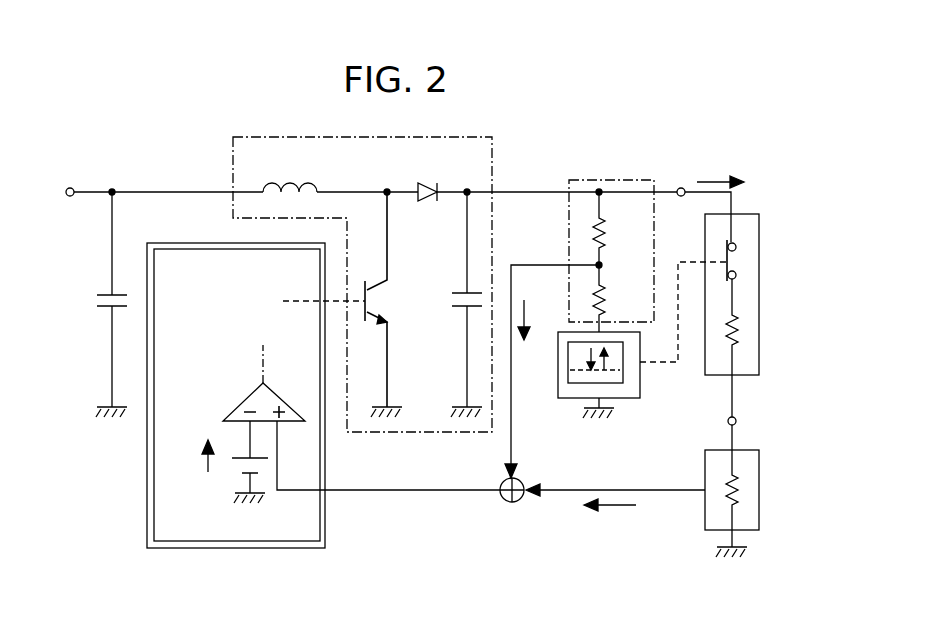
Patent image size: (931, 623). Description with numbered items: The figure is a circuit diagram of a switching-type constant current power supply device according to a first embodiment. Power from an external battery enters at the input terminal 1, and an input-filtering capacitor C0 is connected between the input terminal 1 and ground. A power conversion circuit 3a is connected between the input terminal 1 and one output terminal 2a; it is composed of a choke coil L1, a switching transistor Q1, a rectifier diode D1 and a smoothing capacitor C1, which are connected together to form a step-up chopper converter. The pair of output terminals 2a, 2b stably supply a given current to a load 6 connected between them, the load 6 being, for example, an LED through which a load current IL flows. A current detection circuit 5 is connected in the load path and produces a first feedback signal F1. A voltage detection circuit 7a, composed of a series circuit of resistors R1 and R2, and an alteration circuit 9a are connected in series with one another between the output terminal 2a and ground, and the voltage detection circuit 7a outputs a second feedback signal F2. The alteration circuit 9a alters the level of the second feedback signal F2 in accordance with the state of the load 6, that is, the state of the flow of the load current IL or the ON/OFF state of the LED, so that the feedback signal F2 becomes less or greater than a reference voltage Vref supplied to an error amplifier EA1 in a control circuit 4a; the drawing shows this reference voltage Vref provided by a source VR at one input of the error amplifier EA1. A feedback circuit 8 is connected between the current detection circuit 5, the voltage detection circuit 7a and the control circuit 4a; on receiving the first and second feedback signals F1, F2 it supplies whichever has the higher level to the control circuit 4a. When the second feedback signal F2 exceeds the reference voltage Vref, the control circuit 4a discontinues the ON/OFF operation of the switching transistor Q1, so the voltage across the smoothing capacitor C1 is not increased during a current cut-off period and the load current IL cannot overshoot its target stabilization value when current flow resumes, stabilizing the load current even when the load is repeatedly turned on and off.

The input terminal 1 is at (70, 187).
The output terminal 2a is at (681, 188).
The output terminal 2b is at (736, 421).
The power conversion circuit 3a is at (226, 170).
The control circuit 4a is at (325, 528).
The current detection circuit 5 is at (759, 490).
The load 6 is at (760, 240).
The voltage detection circuit 7a is at (602, 176).
The feedback circuit 8 is at (507, 504).
The alteration circuit 9a is at (622, 400).
The capacitor C0 is at (96, 302).
The smoothing capacitor C1 is at (447, 322).
The choke coil L1 is at (291, 182).
The rectifier diode D1 is at (427, 184).
The switching transistor Q1 is at (379, 300).
The resistor R1 is at (605, 236).
The resistor R2 is at (605, 300).
The error amplifier EA1 is at (242, 406).
The reference voltage source VR is at (278, 466).
The reference voltage Vref is at (208, 474).
The load current IL is at (719, 181).
The first feedback signal F1 is at (620, 510).
The second feedback signal F2 is at (552, 371).